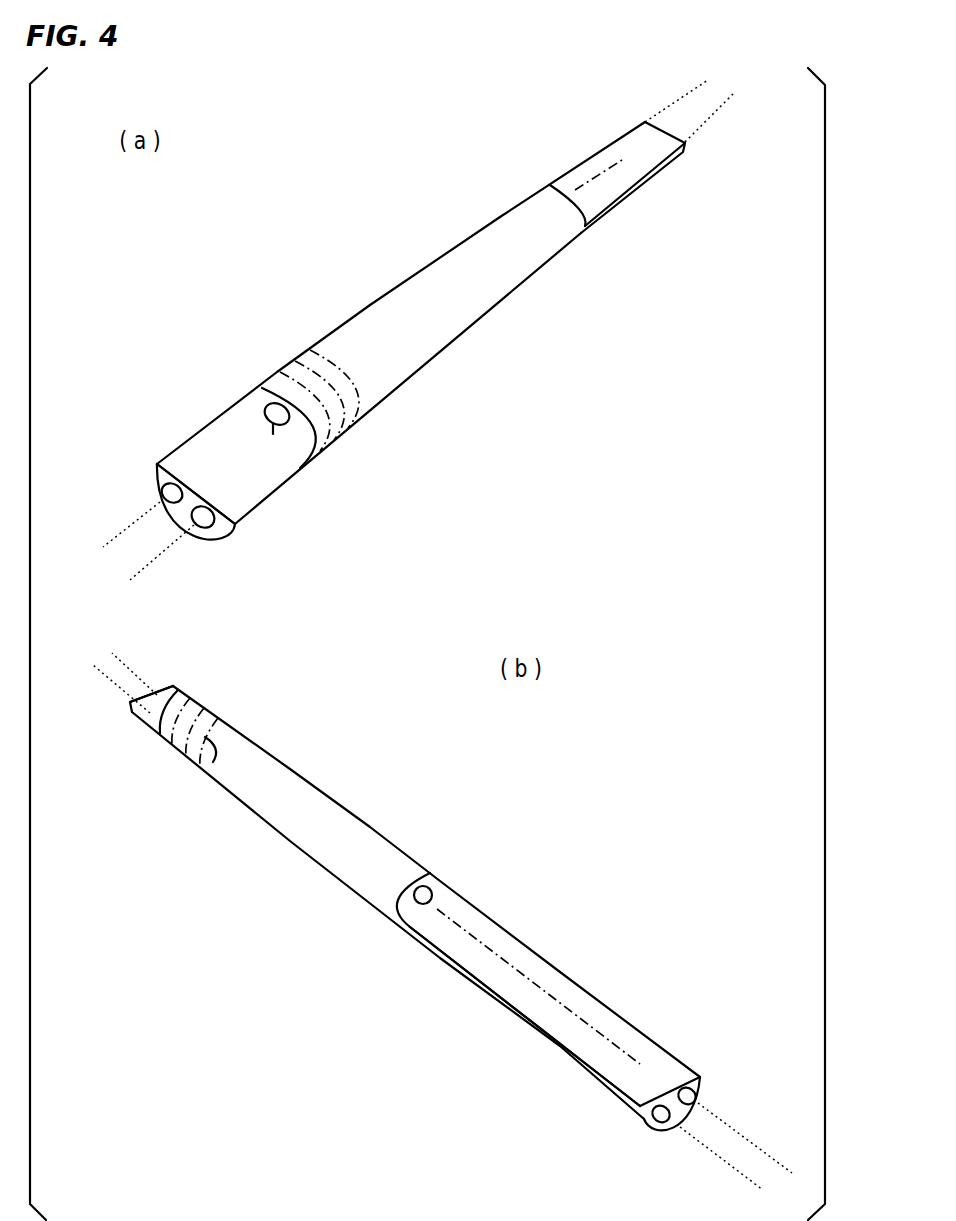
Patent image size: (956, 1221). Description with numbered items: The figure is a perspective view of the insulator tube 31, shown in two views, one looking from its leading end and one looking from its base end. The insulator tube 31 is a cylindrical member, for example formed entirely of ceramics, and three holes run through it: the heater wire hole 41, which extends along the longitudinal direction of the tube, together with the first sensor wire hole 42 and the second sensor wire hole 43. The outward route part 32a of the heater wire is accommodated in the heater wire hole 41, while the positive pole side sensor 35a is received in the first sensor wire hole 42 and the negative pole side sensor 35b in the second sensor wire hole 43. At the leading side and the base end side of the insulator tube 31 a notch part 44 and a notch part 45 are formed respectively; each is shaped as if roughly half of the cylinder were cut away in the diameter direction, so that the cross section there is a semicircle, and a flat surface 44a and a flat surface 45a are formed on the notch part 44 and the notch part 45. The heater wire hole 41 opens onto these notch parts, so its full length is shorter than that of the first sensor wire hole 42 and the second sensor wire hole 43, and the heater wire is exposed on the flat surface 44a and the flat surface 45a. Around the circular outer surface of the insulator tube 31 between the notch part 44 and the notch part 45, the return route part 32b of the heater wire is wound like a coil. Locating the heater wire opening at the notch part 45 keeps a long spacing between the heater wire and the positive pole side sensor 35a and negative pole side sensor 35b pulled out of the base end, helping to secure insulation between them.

The insulator tube 31 is at (487, 334).
The outward route part of the heater wire 32a is at (617, 167).
The return route part of the heater wire 32b is at (347, 390).
The positive pole side sensor 35a is at (713, 113).
The negative pole side sensor 35b is at (679, 106).
The heater wire hole 41 is at (274, 432).
The first sensor wire hole 42 is at (206, 528).
The second sensor wire hole 43 is at (163, 491).
The notch part 44 is at (212, 414).
The flat surface 44a is at (237, 478).
The notch part 45 is at (581, 156).
The flat surface 45a is at (647, 160).